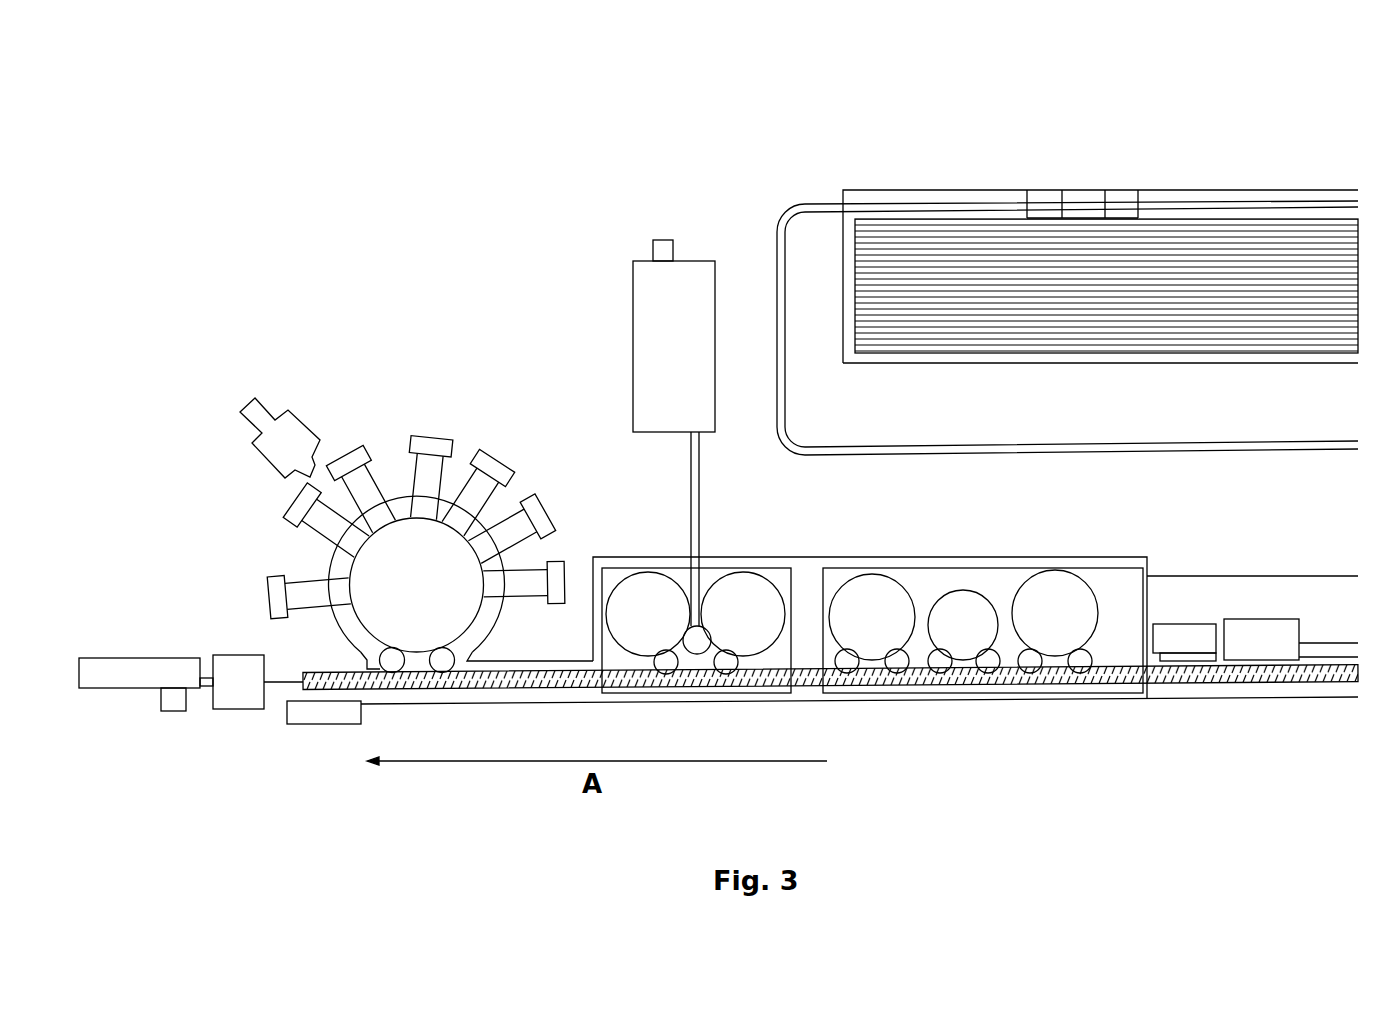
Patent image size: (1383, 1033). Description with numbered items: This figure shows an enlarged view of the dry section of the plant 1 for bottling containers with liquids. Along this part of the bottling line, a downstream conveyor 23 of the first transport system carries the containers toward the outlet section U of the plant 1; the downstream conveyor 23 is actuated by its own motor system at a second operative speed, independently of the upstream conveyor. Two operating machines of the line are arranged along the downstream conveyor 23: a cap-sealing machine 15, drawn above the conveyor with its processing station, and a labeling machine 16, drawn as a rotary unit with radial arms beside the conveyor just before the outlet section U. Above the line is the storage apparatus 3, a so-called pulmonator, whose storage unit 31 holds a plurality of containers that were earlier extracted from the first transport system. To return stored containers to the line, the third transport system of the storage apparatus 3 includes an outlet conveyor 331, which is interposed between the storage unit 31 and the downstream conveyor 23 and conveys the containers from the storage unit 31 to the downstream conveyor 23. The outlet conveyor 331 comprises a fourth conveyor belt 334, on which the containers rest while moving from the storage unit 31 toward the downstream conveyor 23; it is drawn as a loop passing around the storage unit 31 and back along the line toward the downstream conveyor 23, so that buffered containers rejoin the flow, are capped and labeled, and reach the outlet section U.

The plant for bottling containers 1 is at (212, 182).
The storage apparatus 3 is at (1225, 178).
The cap-sealing machine 15 is at (800, 539).
The labeling machine 16 is at (398, 561).
The downstream conveyor 23 is at (958, 683).
The storage unit 31 is at (960, 282).
The outlet conveyor 331 is at (787, 201).
The fourth conveyor belt 334 is at (1165, 448).
The outlet section U is at (152, 696).